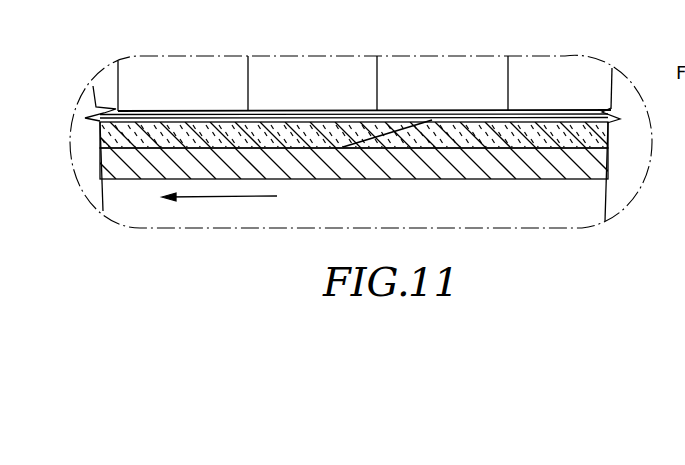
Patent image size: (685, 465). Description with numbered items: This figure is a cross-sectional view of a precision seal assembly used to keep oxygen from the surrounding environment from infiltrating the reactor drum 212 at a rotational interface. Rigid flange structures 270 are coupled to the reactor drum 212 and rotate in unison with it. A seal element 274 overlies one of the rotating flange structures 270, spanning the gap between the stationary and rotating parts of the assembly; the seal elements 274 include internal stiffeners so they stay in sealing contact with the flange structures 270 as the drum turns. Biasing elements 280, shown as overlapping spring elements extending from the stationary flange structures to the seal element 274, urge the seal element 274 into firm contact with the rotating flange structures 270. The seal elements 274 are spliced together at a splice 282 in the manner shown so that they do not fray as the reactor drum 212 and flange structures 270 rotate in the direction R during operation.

The biasing elements 280 is at (284, 67).
The seal elements 274 is at (550, 118).
The slit 282 is at (375, 138).
The rigid flange structures 270 is at (453, 163).
The reactor drum 212 is at (537, 218).
The direction R is at (230, 197).